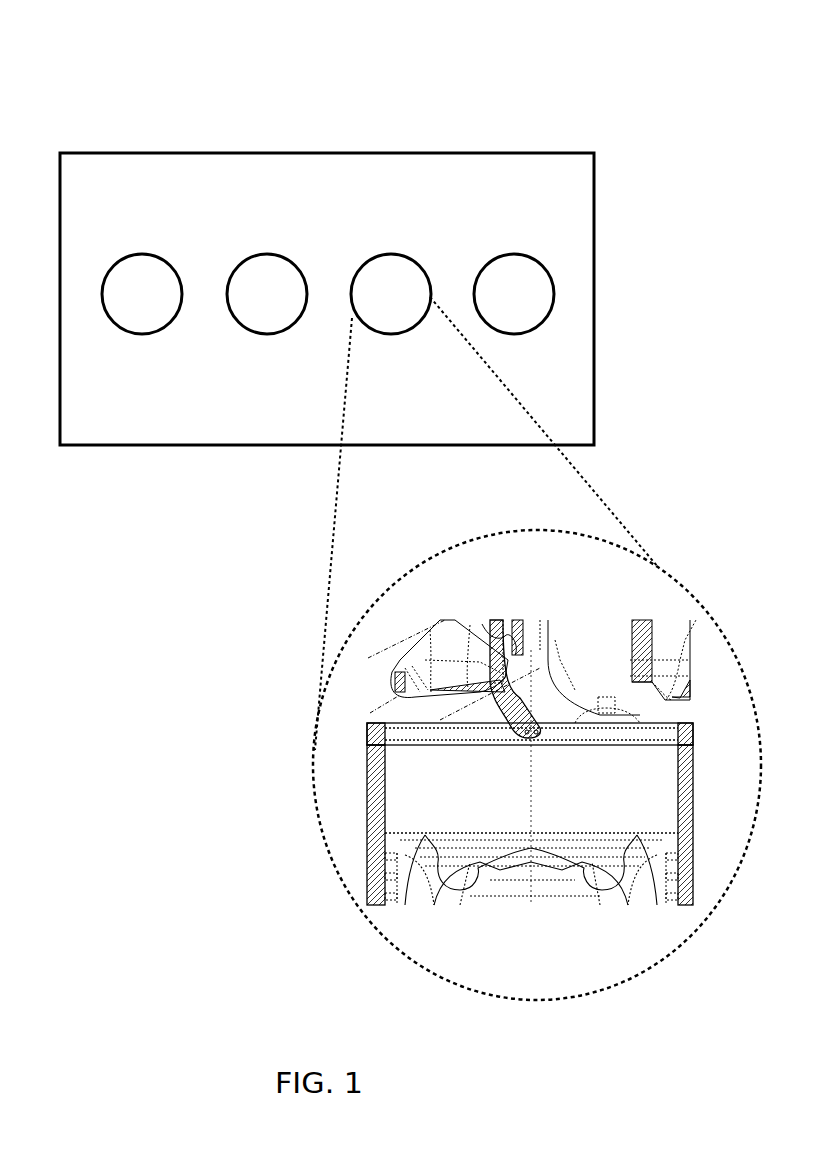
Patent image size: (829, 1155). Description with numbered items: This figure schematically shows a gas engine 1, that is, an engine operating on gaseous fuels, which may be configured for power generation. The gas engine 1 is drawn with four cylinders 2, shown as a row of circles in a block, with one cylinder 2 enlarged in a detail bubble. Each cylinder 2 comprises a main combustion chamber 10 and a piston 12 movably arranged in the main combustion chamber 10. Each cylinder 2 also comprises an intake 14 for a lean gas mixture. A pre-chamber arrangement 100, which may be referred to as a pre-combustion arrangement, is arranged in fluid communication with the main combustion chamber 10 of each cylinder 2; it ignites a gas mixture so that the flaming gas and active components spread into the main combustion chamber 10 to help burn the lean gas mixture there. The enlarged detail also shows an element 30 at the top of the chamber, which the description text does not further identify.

The gas engine 1 is at (418, 102).
The cylinder 2 is at (118, 261).
The pre-chamber arrangement 100 is at (537, 648).
The fuel injector 30 is at (538, 680).
The main combustion chamber 10 is at (542, 800).
The piston 12 is at (413, 833).
The intake 14 is at (620, 726).